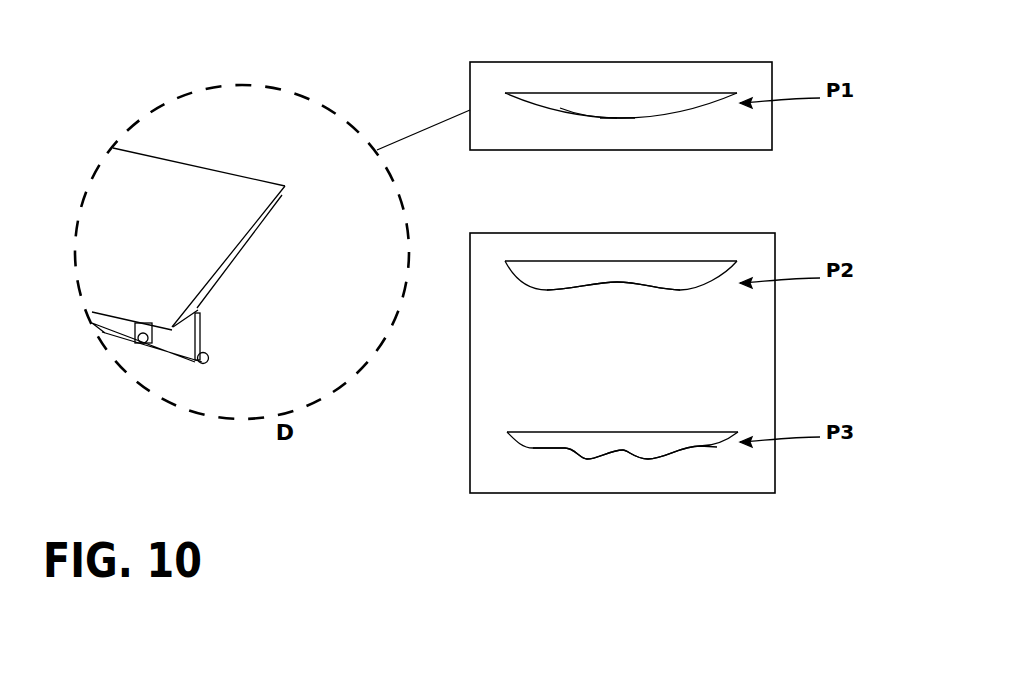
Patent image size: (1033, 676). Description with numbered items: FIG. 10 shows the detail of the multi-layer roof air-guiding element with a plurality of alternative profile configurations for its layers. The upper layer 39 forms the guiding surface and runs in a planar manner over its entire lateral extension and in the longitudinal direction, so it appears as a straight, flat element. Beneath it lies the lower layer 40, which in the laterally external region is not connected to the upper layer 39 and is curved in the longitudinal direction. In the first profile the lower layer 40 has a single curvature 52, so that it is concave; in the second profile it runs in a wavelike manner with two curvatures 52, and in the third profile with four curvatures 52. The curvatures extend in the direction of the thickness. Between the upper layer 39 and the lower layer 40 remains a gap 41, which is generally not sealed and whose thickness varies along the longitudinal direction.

The upper layer 39 is at (202, 197).
The lower layer 40 is at (247, 255).
The gap 41 is at (585, 102).
The curvature 52 is at (617, 118).